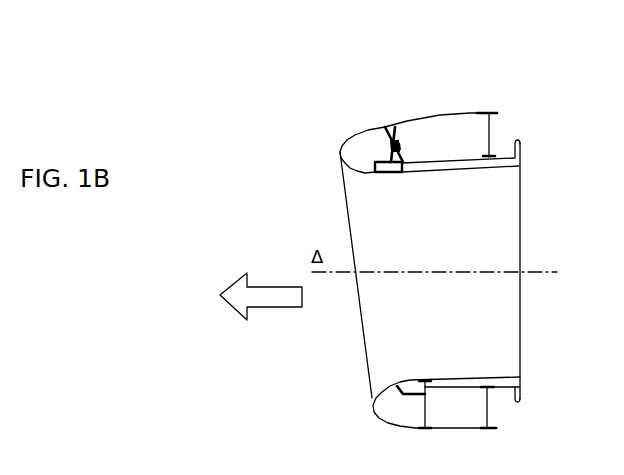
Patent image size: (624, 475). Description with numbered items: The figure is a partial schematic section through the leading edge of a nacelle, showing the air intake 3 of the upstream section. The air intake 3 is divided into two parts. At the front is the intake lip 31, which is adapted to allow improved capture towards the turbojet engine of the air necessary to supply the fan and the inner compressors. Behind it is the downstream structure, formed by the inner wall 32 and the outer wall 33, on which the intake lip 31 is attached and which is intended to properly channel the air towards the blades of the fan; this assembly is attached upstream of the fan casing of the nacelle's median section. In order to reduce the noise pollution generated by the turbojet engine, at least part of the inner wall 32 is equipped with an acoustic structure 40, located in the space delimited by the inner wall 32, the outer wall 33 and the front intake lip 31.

The air intake lip 3 is at (342, 101).
The intake lip 31 is at (340, 153).
The inner wall 32 is at (385, 172).
The outer wall 33 is at (385, 127).
The acoustic structure 40 is at (397, 148).